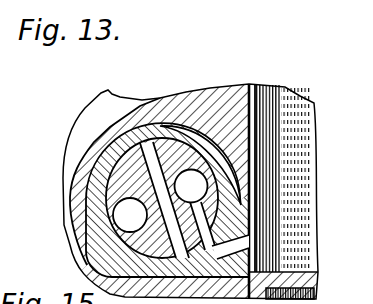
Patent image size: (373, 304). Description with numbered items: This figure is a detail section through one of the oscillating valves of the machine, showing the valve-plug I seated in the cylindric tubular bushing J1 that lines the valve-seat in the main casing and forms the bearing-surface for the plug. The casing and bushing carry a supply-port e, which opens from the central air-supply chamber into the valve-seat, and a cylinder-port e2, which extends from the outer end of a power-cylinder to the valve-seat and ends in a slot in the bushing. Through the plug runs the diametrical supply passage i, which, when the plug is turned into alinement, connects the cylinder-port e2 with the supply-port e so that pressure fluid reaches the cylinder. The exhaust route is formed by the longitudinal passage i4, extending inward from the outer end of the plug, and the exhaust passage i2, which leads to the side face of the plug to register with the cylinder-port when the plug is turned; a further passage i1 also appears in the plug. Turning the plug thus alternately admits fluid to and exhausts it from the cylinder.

The supply-port e is at (110, 127).
The bushing J1 is at (178, 125).
The valve-plug I is at (100, 257).
The supply passage i is at (160, 177).
The bore i1 is at (192, 186).
The exhaust passage i2 is at (203, 218).
The longitudinal exhaust passage i4 is at (130, 217).
The cylinder-port e2 is at (242, 258).